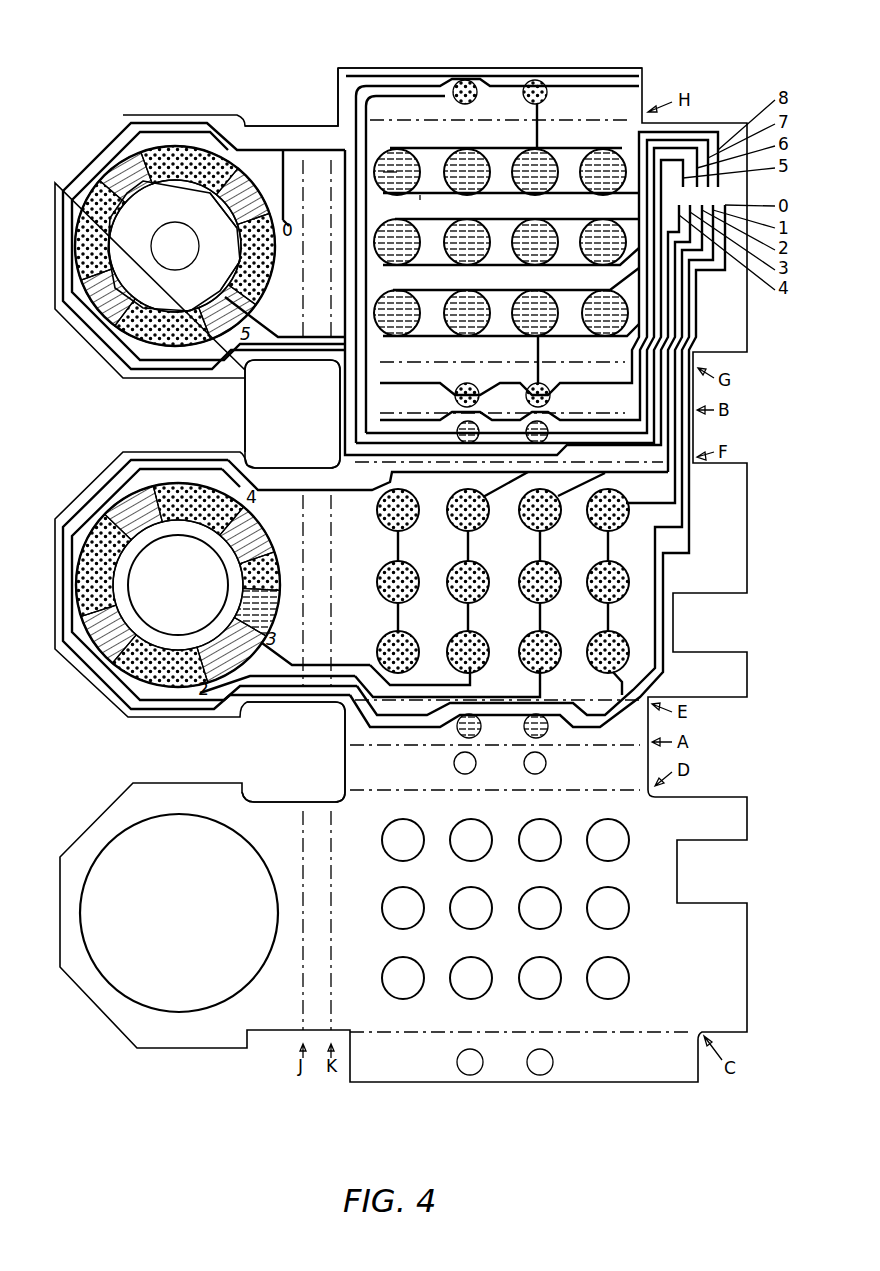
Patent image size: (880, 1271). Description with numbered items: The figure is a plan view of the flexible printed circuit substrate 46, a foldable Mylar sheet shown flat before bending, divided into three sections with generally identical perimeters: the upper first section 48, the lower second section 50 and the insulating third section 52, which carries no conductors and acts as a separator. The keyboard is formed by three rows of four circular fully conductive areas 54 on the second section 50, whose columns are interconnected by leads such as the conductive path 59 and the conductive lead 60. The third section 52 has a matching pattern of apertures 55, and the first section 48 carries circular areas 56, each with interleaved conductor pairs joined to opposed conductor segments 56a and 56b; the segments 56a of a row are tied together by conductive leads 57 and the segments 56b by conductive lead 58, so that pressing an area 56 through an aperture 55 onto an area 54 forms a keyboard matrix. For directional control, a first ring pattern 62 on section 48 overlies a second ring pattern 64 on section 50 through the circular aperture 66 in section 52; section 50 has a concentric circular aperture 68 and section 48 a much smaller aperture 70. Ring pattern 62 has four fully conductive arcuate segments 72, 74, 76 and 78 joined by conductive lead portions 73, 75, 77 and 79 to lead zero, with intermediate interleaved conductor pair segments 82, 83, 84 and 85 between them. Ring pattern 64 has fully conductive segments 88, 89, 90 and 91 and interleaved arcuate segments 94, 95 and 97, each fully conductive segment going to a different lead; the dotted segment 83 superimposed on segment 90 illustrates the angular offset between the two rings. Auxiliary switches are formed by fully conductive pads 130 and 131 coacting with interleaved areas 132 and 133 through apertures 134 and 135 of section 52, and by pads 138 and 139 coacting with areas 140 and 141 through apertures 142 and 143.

The flexible printed circuit substrate 46 is at (390, 66).
The first section 48 is at (315, 124).
The second section 50 is at (262, 466).
The third section 52 is at (270, 800).
The circular fully conductive areas 54 is at (398, 640).
The apertures 55 is at (393, 896).
The circular areas 56 is at (520, 168).
The conductor segment 56a is at (378, 172).
The conductor segment 56b is at (412, 192).
The conductive leads 57 is at (558, 150).
The conductive lead 58 is at (483, 191).
The conductive path or lead 59 is at (400, 548).
The conductive lead 60 is at (470, 548).
The first ring pattern 62 is at (135, 150).
The second ring pattern 64 is at (92, 518).
The circular aperture 66 is at (128, 990).
The circular aperture 68 is at (160, 630).
The circular aperture 70 is at (160, 258).
The fully conductive arcuate segment 72 is at (100, 230).
The conductive lead portion 73 is at (146, 188).
The fully conductive arcuate segment 74 is at (189, 170).
The conductive lead portion 75 is at (222, 218).
The fully conductive arcuate segment 76 is at (251, 258).
The conductive lead portion 77 is at (216, 290).
The fully conductive arcuate segment 78 is at (163, 322).
The conductive lead portion 79 is at (128, 276).
The intermediate segment 82 is at (108, 166).
The intermediate segment 83 is at (250, 175).
The intermediate segment 84 is at (212, 345).
The intermediate segment 85 is at (88, 300).
The fully conductive segment 88 is at (103, 565).
The fully conductive segment 89 is at (198, 508).
The fully conductive segment 90 is at (250, 600).
The fully conductive segment 91 is at (189, 652).
The arcuate segment 94 is at (125, 500).
The arcuate segment 95 is at (238, 530).
The arcuate segment 97 is at (92, 635).
The fully conductive circular pad 130 is at (461, 80).
The fully conductive circular pad 131 is at (530, 80).
The circular area 132 is at (457, 728).
The circular area 133 is at (523, 727).
The aperture 134 is at (455, 765).
The aperture 135 is at (546, 765).
The fully conductive pad 138 is at (457, 388).
The fully conductive pad 139 is at (549, 387).
The area 140 is at (457, 432).
The area 141 is at (526, 432).
The aperture 142 is at (468, 1076).
The aperture 143 is at (538, 1076).